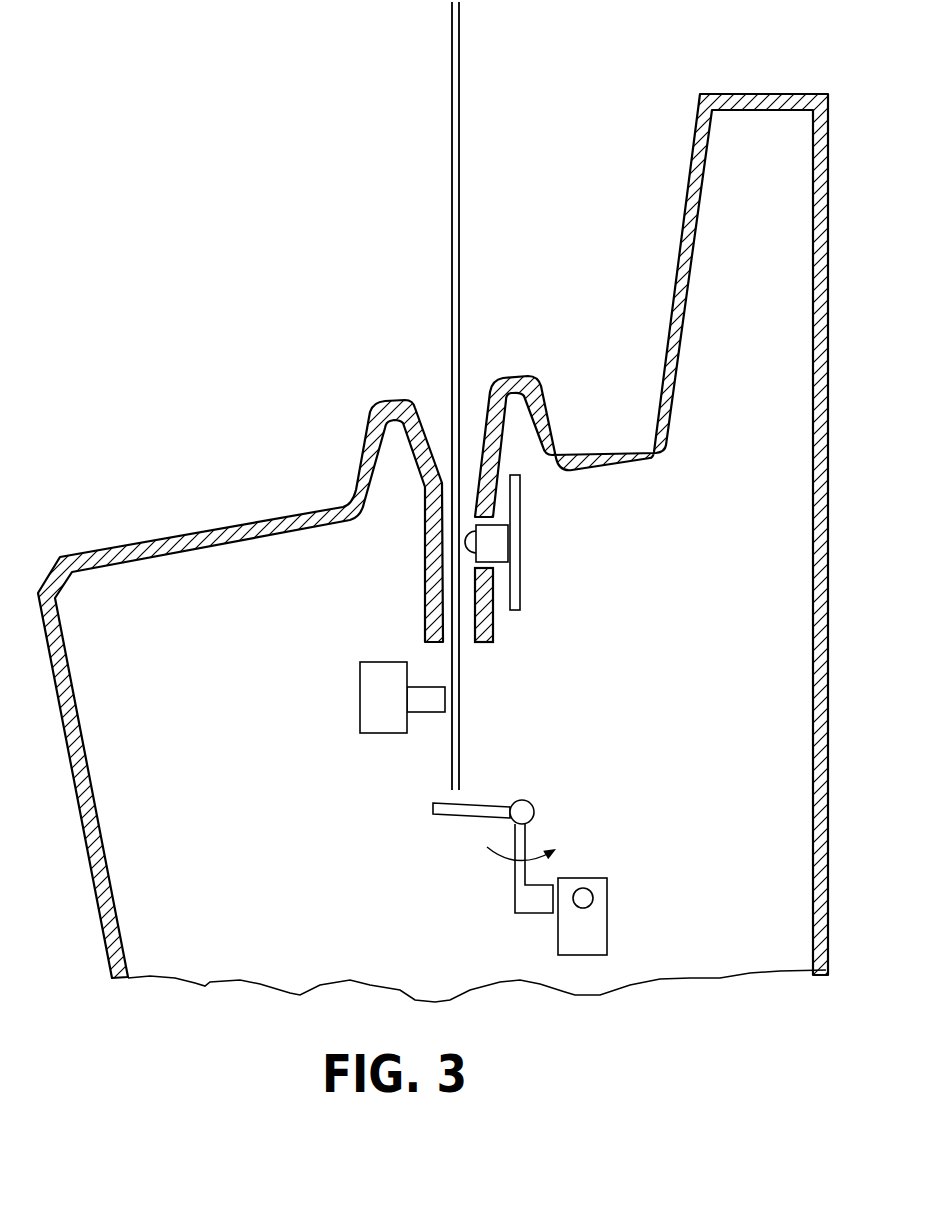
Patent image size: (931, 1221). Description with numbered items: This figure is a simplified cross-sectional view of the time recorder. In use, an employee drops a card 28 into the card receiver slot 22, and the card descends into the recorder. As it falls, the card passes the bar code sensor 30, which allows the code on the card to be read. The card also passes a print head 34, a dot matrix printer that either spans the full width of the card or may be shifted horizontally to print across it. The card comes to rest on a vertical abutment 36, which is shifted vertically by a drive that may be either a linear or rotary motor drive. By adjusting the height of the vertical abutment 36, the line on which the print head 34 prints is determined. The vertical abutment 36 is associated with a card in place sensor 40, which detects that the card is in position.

The card receiver slot 22 is at (535, 383).
The card 28 is at (459, 88).
The bar code sensor 30 is at (522, 535).
The print head 34 is at (360, 690).
The vertical abutment 36 is at (448, 815).
The card in place (CIP) sensor 40 is at (585, 878).